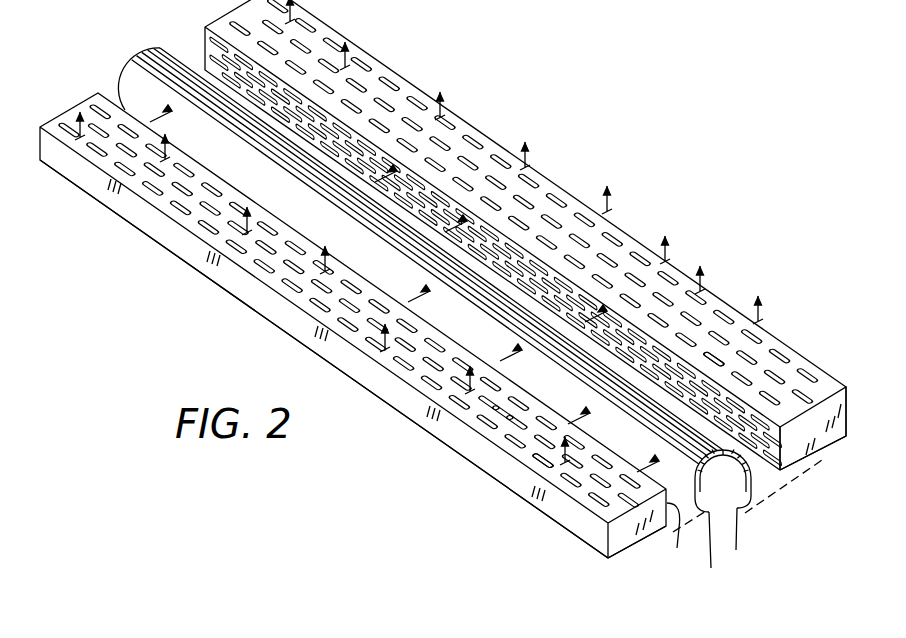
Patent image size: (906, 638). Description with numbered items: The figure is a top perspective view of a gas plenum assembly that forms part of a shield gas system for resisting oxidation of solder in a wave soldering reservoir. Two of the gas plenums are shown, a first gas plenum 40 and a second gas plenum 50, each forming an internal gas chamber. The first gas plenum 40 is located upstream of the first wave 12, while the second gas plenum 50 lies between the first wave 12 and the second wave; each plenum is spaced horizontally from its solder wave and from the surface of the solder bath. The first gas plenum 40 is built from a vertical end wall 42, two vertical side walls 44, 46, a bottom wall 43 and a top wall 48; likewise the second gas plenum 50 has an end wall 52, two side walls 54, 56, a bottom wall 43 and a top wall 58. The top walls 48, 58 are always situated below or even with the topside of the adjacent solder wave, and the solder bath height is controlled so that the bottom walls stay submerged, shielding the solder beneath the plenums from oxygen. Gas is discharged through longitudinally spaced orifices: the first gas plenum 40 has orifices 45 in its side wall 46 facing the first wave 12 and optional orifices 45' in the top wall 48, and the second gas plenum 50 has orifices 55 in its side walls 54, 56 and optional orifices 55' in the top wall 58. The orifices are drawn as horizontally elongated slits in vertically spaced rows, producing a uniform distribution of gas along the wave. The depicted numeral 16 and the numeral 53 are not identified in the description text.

The first wave 12 is at (749, 482).
The stem 16 is at (722, 547).
The first gas plenum 40 is at (431, 433).
The vertical end wall 42 is at (605, 552).
The bottom wall 43 is at (622, 555).
The vertical side wall 44 is at (397, 398).
The orifices 45 is at (715, 538).
The orifices 45' is at (510, 496).
The vertical side wall 46 is at (676, 508).
The top wall 48 is at (497, 440).
The second gas plenum 50 is at (737, 308).
The end wall 52 is at (829, 438).
The bottom edge of second bar 53 is at (806, 470).
The side wall 54 is at (763, 472).
The orifices 55 is at (496, 251).
The orifices 55' is at (704, 296).
The side wall 56 is at (808, 362).
The top wall 58 is at (767, 344).